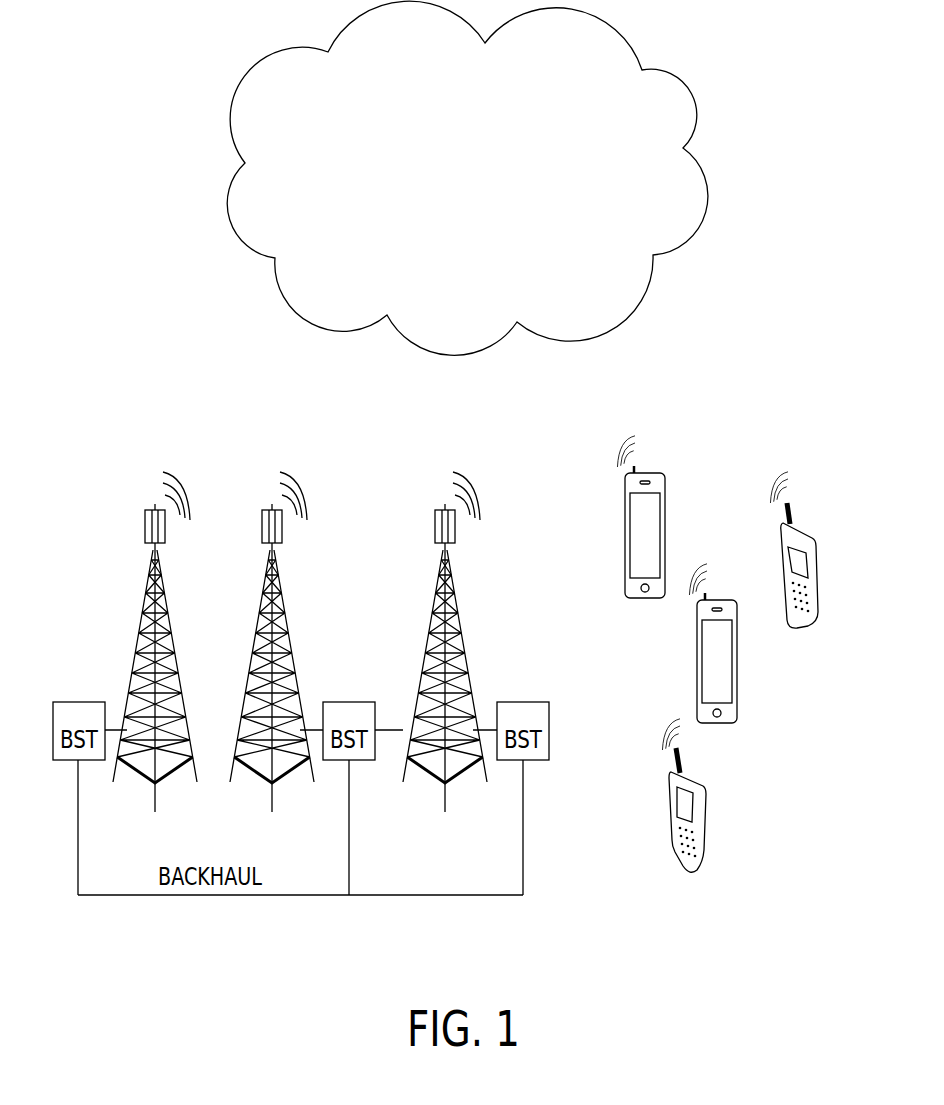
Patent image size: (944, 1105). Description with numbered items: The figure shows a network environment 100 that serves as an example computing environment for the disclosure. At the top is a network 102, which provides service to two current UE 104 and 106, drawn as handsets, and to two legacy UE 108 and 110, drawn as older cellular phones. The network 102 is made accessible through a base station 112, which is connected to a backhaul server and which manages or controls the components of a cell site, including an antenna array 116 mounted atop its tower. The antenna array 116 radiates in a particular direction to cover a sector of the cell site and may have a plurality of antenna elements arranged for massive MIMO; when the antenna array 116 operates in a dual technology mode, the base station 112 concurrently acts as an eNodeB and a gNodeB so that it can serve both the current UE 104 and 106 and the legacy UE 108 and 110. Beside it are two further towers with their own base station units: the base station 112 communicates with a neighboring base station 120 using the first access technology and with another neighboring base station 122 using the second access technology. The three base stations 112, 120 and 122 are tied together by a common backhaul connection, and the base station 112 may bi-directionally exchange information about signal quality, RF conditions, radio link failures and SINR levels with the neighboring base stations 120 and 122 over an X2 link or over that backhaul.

The network environment 100 is at (64, 118).
The network 102 is at (451, 194).
The current UE 104 is at (666, 528).
The current UE 106 is at (738, 660).
The legacy UE 108 is at (707, 810).
The legacy UE 110 is at (820, 580).
The base station 112 is at (522, 702).
The antenna array 116 is at (456, 528).
The neighboring base station 120 is at (348, 702).
The neighboring base station 122 is at (80, 702).